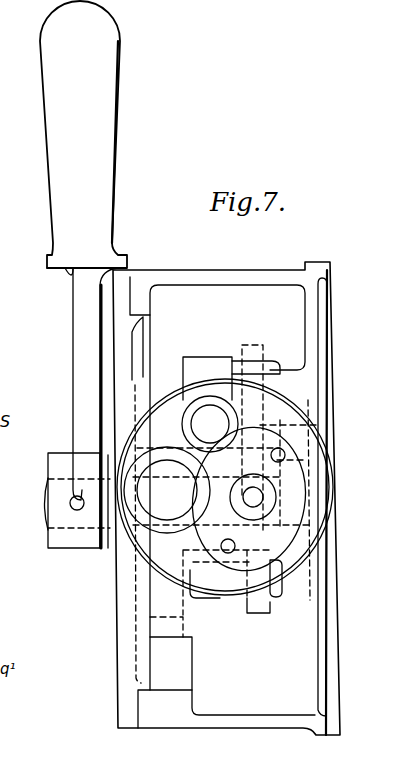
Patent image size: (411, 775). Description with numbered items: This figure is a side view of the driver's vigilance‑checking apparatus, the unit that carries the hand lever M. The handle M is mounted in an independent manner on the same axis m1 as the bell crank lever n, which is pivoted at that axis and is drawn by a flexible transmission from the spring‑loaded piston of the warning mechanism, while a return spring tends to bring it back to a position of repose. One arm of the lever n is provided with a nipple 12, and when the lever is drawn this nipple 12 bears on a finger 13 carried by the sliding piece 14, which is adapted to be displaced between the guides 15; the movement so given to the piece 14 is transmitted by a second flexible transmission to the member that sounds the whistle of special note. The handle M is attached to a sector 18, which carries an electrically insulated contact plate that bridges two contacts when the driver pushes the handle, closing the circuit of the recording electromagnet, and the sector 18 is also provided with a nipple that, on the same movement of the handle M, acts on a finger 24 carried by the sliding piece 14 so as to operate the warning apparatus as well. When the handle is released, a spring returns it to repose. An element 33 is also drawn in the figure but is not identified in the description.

The nipple 12 is at (267, 370).
The finger 13 is at (252, 356).
The sliding piece 14 is at (256, 485).
The guides 15 is at (278, 447).
The sector 18 is at (165, 592).
The finger 24 is at (261, 596).
The stop 33 is at (216, 582).
The bell crank lever n is at (198, 367).
The hand lever M is at (83, 274).
The axis m1 is at (43, 501).